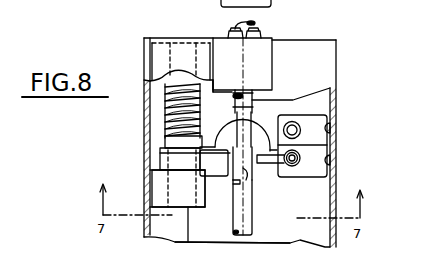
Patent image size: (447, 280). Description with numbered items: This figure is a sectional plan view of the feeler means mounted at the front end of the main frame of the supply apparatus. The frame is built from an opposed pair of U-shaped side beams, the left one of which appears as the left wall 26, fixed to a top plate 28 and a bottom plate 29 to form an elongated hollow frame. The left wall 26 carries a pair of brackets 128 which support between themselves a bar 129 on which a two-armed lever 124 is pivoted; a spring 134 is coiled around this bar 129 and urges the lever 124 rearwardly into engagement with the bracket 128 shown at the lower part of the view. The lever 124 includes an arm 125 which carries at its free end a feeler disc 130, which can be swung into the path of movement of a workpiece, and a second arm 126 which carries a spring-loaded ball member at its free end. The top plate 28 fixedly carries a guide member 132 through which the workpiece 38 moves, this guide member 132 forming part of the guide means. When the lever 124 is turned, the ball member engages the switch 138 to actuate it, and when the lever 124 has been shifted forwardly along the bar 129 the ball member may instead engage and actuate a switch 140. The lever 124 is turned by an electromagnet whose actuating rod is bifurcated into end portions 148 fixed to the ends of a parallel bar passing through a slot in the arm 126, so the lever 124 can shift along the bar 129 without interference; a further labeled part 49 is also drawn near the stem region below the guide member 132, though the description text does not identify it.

The side beam 26 is at (147, 113).
The top plate 28 is at (328, 62).
The bottom plate 29 is at (232, 253).
The workpiece 38 is at (255, 24).
The stem 49 is at (246, 128).
The two-armed lever 124 is at (216, 133).
The arm 125 is at (186, 155).
The second arm 126 is at (246, 176).
The bracket 128 is at (158, 78).
The bar 129 is at (173, 130).
The feeler disc 130 is at (216, 173).
The guide member 132 is at (224, 48).
The spring 134 is at (170, 97).
The switch 138 is at (307, 157).
The switch 140 is at (293, 130).
The end portion 148 is at (240, 107).